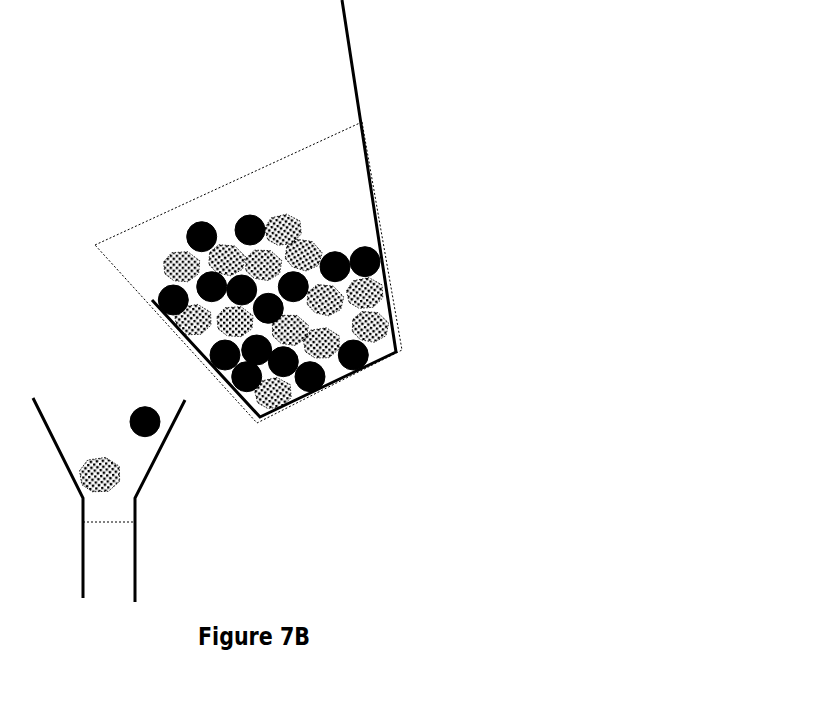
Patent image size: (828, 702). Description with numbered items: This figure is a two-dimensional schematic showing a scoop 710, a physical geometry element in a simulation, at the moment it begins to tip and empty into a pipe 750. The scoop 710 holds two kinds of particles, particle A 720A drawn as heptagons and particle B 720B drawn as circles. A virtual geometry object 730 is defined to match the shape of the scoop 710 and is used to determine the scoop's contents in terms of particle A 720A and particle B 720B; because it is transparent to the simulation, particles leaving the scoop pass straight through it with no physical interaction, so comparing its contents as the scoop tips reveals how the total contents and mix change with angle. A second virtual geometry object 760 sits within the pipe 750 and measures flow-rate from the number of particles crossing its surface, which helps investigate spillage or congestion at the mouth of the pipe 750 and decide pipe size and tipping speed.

The scoop 710 is at (296, 211).
The virtual geometry object 730 is at (217, 162).
The particle A 720A is at (397, 300).
The particle B 720B is at (402, 347).
The pipe 750 is at (148, 490).
The virtual geometry object 760 is at (165, 542).